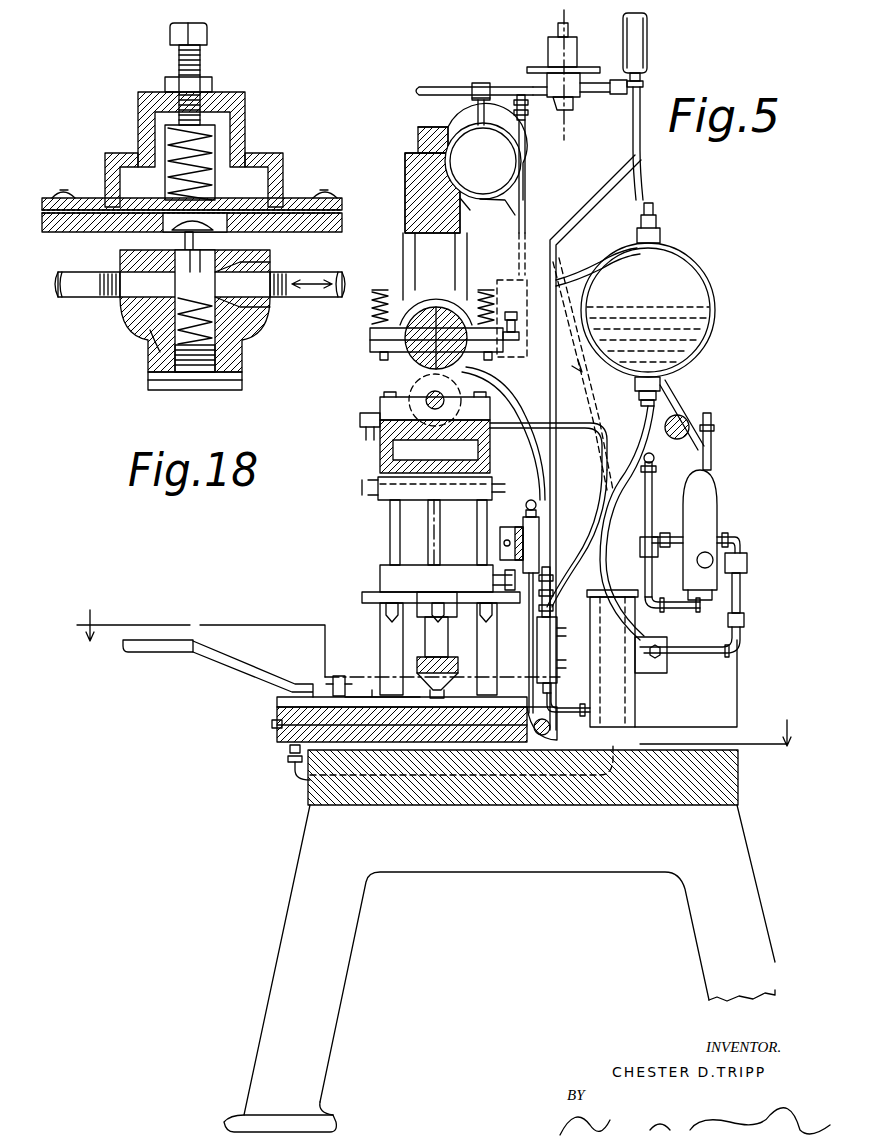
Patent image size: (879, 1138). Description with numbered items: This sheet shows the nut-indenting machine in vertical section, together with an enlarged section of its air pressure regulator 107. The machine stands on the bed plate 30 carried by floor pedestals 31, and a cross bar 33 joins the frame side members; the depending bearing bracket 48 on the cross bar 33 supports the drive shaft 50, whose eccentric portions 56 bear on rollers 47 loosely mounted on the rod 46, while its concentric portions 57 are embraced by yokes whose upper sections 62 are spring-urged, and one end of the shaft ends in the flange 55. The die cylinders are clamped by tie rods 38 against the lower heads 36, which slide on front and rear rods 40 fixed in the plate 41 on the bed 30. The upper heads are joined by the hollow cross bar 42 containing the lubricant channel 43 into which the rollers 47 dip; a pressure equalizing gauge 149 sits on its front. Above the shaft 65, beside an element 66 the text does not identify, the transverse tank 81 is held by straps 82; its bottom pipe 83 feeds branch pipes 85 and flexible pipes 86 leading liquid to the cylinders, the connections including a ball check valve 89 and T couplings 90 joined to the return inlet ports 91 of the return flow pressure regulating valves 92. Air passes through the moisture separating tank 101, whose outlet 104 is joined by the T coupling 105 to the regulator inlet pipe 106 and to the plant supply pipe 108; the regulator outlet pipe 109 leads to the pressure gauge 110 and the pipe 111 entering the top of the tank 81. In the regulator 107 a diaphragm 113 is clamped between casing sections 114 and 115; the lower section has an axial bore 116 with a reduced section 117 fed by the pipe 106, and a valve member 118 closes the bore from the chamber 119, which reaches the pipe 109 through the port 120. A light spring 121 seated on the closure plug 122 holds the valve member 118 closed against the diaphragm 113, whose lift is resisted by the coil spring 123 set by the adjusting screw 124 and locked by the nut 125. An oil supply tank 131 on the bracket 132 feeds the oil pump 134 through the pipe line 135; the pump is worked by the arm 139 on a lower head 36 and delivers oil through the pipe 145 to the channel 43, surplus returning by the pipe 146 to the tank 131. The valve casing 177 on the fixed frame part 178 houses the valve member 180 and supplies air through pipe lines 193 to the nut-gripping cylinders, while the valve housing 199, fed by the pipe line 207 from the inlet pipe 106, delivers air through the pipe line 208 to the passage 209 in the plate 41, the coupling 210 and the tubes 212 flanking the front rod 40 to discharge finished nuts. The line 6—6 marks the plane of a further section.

In FIG. 5, the section line 6- 6 is at (434, 667).
In FIG. 5, the bed plate 30 is at (576, 800).
In FIG. 5, the floor pedestals 31 is at (358, 903).
In FIG. 5, the cross bar 33 is at (428, 176).
In FIG. 5, the lower heads 36 is at (392, 577).
In FIG. 5, the tie rods 38 is at (392, 536).
In FIG. 5, the front and rear rods 40 is at (380, 625).
In FIG. 5, the plate 41 is at (276, 710).
In FIG. 5, the hollow cross bar 42 is at (388, 455).
In FIG. 5, the lubricant receiving channel 43 is at (368, 432).
In FIG. 5, the rod 46 is at (425, 396).
In FIG. 5, the roller 47 is at (655, 508).
In FIG. 5, the depending bearing bracket 48 is at (398, 262).
In FIG. 5, the drive shaft 50 is at (450, 328).
In FIG. 5, the flange 55 is at (386, 496).
In FIG. 5, the eccentric portion 56 is at (438, 306).
In FIG. 5, the cylindrical portions 57 is at (448, 322).
In FIG. 5, the upper yoke section 62 is at (410, 304).
In FIG. 5, the shaft 65 is at (702, 410).
In FIG. 5, the valve 66 is at (690, 400).
In FIG. 5, the tank 81 is at (682, 272).
In FIG. 5, the metal straps 82 is at (588, 263).
In FIG. 5, the pipe 83 is at (640, 411).
In FIG. 5, the branch pipes 85 is at (690, 645).
In FIG. 5, the flexible pipes 86 is at (622, 462).
In FIG. 5, the ball check valve 89 is at (748, 618).
In FIG. 5, the T coupling members 90 is at (748, 570).
In FIG. 5, the return inlet ports 91 is at (728, 550).
In FIG. 5, the return flow pressure regulating valves 92 is at (715, 510).
In FIG. 5, the moisture separating tank 101 is at (500, 158).
In FIG. 5, the outlet 104 is at (482, 118).
In FIG. 5, the coupling 105 is at (472, 85).
In FIG. 18, the air inlet pipe 106 is at (72, 298).
In FIG. 5, the air inlet pipe 106 is at (555, 100).
In FIG. 18, the pressure regulator 107 is at (247, 140).
In FIG. 5, the pressure regulator 107 is at (578, 52).
In FIG. 5, the pipe 108 is at (430, 88).
In FIG. 18, the pipe 109 is at (310, 298).
In FIG. 5, the pipe 109 is at (595, 95).
In FIG. 5, the pressure gauge 110 is at (645, 52).
In FIG. 5, the pipe 111 is at (641, 172).
In FIG. 18, the diaphragm 113 is at (255, 210).
In FIG. 18, the upper casing section 114 is at (120, 155).
In FIG. 18, the lower casing section 115 is at (120, 259).
In FIG. 18, the axial bore 116 is at (175, 332).
In FIG. 18, the reduced diameter section 117 is at (225, 312).
In FIG. 18, the valve member 118 is at (212, 232).
In FIG. 18, the chamber 119 is at (175, 222).
In FIG. 18, the port 120 is at (238, 268).
In FIG. 18, the light coil spring 121 is at (212, 350).
In FIG. 18, the closure plug 122 is at (190, 378).
In FIG. 18, the coil spring 123 is at (228, 140).
In FIG. 18, the adjusting screw 124 is at (196, 62).
In FIG. 18, the nut 125 is at (165, 85).
In FIG. 5, the oil supply tank 131 is at (640, 712).
In FIG. 5, the fixed bracket 132 is at (655, 662).
In FIG. 5, the oil pump 134 is at (548, 632).
In FIG. 5, the pipe line 135 is at (540, 712).
In FIG. 5, the arm 139 is at (520, 595).
In FIG. 5, the pipe 145 is at (524, 410).
In FIG. 5, the pipe 146 is at (574, 430).
In FIG. 5, the gauge 149 is at (366, 452).
In FIG. 5, the valve casing 177 is at (522, 520).
In FIG. 5, the fixed part 178 is at (500, 549).
In FIG. 5, the valve member 180 is at (560, 207).
In FIG. 5, the pipe lines 193 is at (537, 662).
In FIG. 5, the valve housing 199 is at (519, 334).
In FIG. 5, the pipe line 207 is at (524, 204).
In FIG. 5, the pipe line 208 is at (292, 785).
In FIG. 5, the horizontal passage 209 is at (277, 738).
In FIG. 5, the coupling member 210 is at (340, 672).
In FIG. 5, the pipe or tube 212 is at (372, 690).